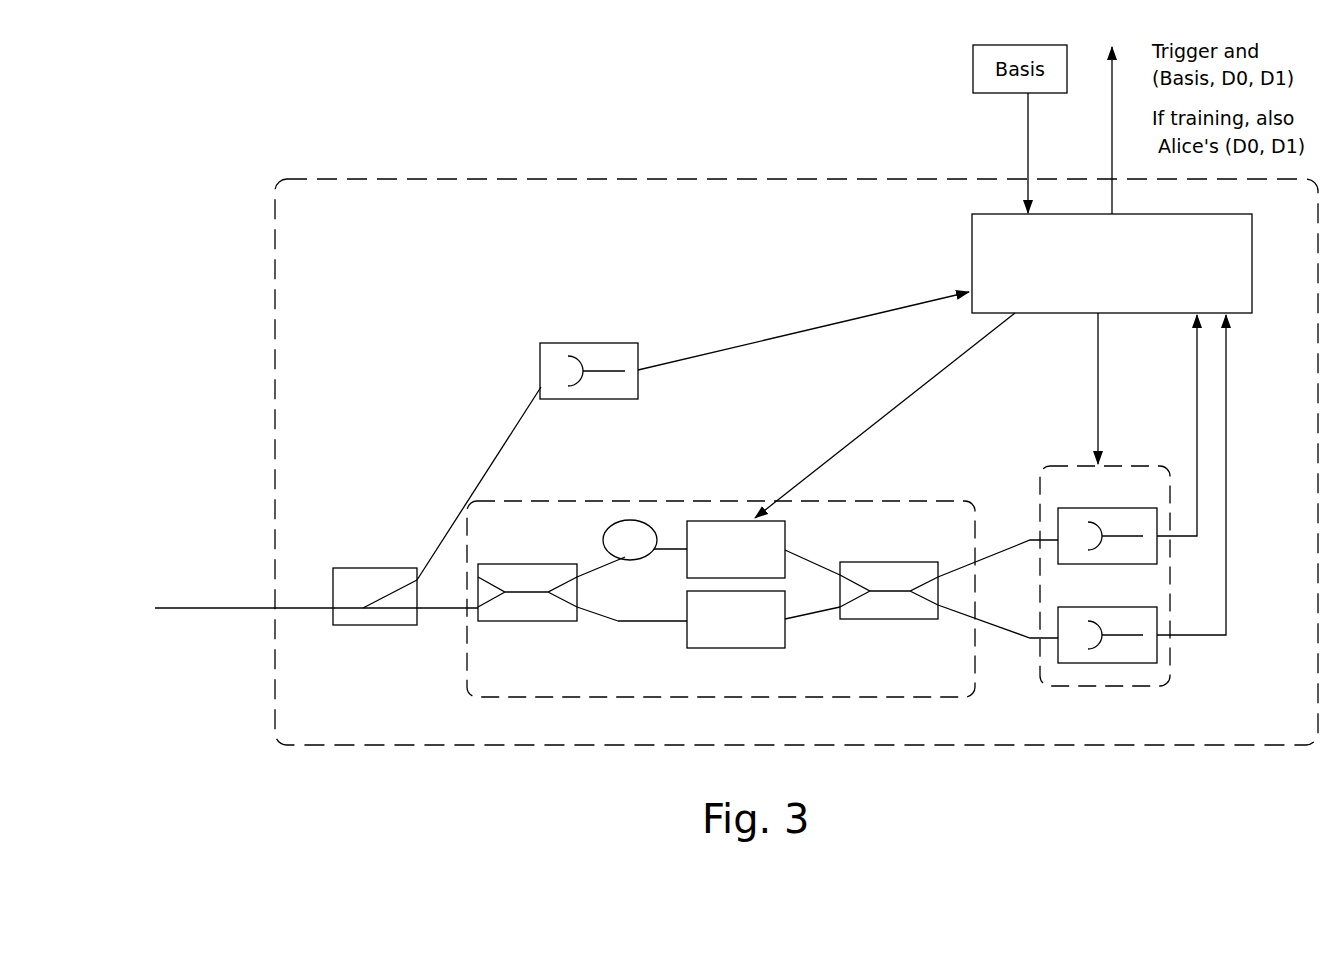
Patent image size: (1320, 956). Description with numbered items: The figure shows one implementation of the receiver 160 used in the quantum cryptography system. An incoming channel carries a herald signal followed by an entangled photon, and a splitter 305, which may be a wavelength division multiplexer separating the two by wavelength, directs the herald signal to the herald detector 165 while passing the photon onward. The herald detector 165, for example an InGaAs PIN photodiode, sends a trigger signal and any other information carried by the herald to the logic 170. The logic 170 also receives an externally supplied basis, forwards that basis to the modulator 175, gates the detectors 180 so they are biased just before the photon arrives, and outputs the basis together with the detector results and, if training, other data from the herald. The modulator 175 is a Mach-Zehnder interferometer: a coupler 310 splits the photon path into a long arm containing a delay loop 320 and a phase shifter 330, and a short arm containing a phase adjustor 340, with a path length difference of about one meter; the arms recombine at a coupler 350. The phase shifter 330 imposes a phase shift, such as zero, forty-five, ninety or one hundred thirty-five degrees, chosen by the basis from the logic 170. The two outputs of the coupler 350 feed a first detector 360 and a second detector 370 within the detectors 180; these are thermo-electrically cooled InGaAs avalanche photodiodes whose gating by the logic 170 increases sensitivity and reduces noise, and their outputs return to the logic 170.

The receiver 160 is at (680, 179).
The herald detector 165 is at (595, 352).
The logic 170 is at (975, 236).
The modulator 175 is at (625, 501).
The detectors 180 is at (1128, 466).
The splitter 305 is at (350, 578).
The coupler 310 is at (512, 576).
The delay loop 320 is at (633, 555).
The phase shifter 330 is at (778, 532).
The phase adjustor 340 is at (700, 637).
The coupler 350 is at (890, 607).
The first detector 360 is at (1145, 556).
The second detector 370 is at (1145, 656).